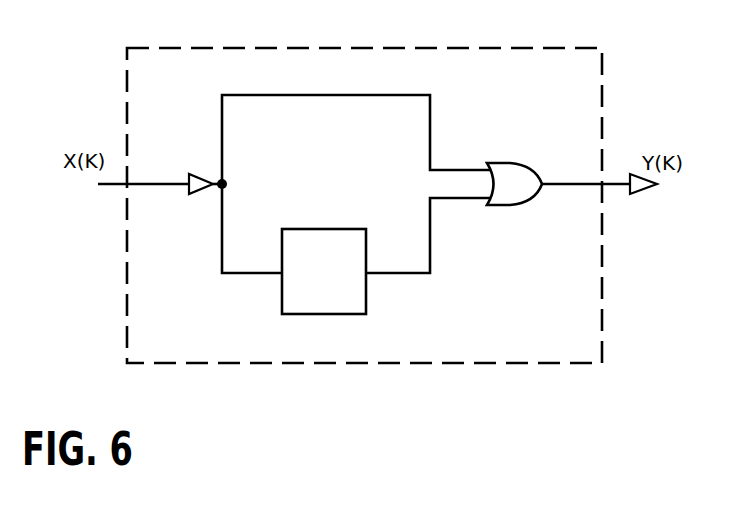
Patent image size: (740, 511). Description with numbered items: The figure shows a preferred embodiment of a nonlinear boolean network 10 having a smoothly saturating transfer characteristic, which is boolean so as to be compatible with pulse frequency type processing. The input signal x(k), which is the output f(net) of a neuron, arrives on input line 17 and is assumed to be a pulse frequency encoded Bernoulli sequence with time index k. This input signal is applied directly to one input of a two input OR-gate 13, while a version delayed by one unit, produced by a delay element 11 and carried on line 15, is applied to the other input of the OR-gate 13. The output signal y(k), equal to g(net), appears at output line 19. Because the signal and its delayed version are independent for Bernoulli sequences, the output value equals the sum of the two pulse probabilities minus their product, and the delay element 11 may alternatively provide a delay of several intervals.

The nonlinear network 10 is at (585, 363).
The delay element 11 is at (345, 314).
The two input OR-gate 13 is at (513, 163).
The line 15 is at (431, 258).
The input line 17 is at (155, 186).
The output line 19 is at (550, 186).